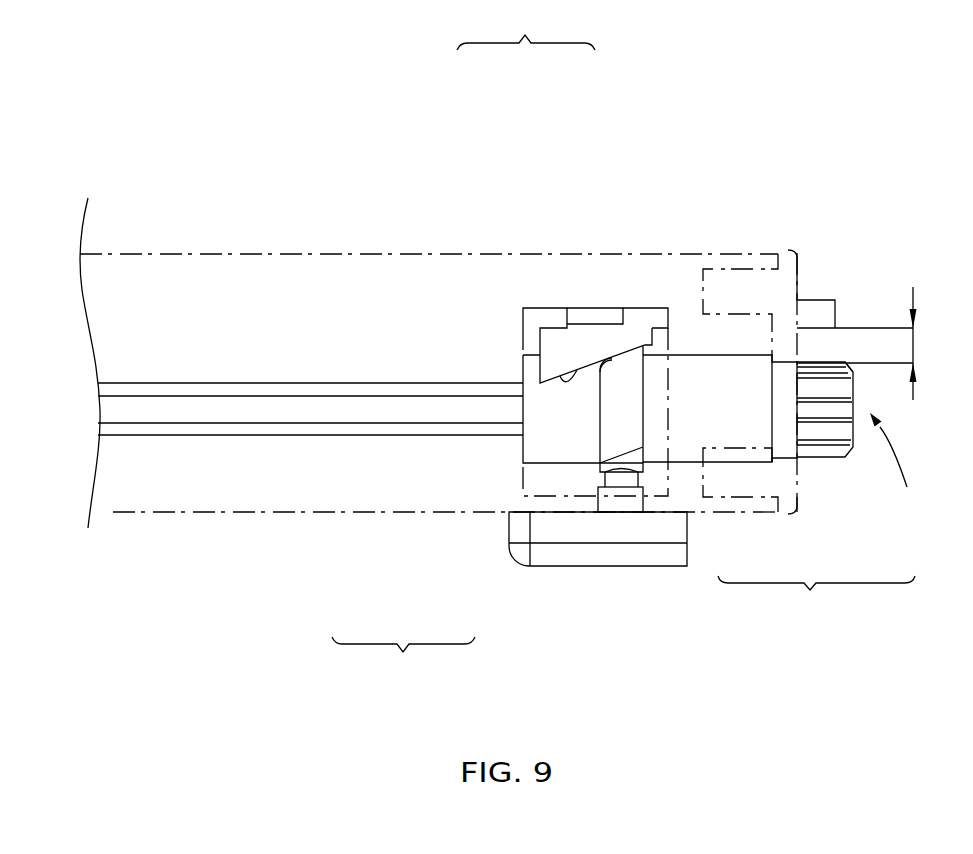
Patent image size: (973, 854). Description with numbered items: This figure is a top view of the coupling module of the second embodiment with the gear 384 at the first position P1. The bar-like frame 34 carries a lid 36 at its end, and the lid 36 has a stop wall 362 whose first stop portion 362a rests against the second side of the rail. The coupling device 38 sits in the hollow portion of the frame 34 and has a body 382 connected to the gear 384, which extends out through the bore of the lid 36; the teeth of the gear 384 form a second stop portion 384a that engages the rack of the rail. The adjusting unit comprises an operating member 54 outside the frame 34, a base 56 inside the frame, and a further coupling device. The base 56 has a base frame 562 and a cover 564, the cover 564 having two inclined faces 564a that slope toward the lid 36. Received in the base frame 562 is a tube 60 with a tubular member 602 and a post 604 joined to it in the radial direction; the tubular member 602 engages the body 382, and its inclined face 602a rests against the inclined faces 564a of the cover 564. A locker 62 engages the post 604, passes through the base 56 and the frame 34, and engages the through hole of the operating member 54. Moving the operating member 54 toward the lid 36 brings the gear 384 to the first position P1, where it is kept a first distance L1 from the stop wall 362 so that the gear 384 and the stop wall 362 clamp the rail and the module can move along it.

The frame 34 is at (407, 253).
The lid 36 is at (788, 250).
The stop wall 362 is at (837, 300).
The first stop portion 362a is at (816, 328).
The coupling device 38 is at (816, 601).
The body 382 is at (732, 425).
The gear 384 is at (857, 420).
The second stop portion 384a is at (840, 358).
The operating member 54 is at (560, 557).
The base 56 is at (562, 250).
The base frame 562 is at (517, 327).
The cover 564 is at (552, 318).
The inclined face 564a is at (580, 373).
The tube 60 is at (403, 661).
The tubular member 602 is at (613, 410).
The inclined face 602a is at (600, 377).
The post 604 is at (613, 474).
The locker 62 is at (625, 502).
The first distance L1 is at (929, 343).
The first position P1 is at (898, 472).